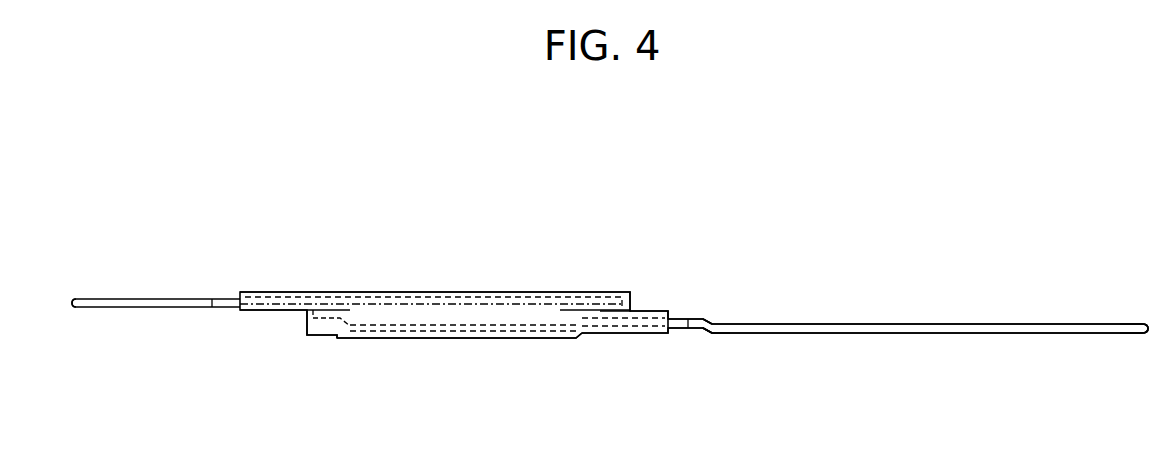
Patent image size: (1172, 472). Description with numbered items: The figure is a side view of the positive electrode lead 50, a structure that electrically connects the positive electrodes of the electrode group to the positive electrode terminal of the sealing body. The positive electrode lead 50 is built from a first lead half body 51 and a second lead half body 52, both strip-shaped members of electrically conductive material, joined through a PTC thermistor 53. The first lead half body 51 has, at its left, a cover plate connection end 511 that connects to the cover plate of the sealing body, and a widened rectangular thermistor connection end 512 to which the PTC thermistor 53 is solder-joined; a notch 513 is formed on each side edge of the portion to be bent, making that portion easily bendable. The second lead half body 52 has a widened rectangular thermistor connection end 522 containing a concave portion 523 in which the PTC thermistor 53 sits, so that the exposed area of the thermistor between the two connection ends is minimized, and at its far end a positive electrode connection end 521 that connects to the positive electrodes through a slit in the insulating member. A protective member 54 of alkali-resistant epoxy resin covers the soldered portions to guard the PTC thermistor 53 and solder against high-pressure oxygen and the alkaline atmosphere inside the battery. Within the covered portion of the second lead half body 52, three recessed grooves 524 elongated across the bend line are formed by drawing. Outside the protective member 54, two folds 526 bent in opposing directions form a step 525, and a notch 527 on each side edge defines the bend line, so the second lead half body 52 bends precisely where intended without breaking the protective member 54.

The positive electrode lead 50 is at (641, 219).
The first lead half body 51 is at (155, 298).
The cover plate connection end 511 is at (92, 297).
The notch 513 is at (222, 308).
The PTC thermistor 53 is at (399, 317).
The thermistor connection end 512 is at (450, 292).
The concave portion 523 is at (516, 320).
The protective member 54 is at (336, 339).
The thermistor connection end 522 is at (472, 339).
The recessed groove 524 is at (610, 335).
The step 525 is at (706, 320).
The fold 526 is at (701, 319).
The notch 527 is at (712, 339).
The second lead half body 52 is at (961, 323).
The positive electrode connection end 521 is at (1120, 323).